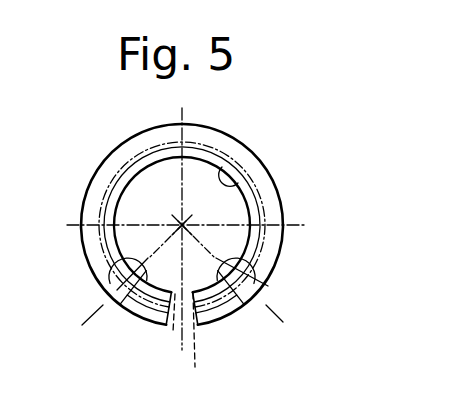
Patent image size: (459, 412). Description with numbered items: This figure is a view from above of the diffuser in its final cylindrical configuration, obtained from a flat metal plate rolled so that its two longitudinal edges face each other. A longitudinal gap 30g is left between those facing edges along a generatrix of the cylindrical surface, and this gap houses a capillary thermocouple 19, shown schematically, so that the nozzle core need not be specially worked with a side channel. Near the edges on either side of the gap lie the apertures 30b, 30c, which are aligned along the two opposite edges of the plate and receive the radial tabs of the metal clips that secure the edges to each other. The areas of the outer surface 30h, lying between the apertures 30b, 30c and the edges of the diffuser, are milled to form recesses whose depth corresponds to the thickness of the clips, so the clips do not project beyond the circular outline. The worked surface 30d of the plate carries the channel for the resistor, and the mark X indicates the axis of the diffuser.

The aperture 30b is at (105, 268).
The aperture 30c is at (270, 277).
The surface of the plate 30d is at (238, 185).
The longitudinal gap 30g is at (184, 297).
The recessed areas of the outer surface 30h is at (128, 312).
The capillary thermocouple 19 is at (195, 367).
The center axis X is at (181, 222).